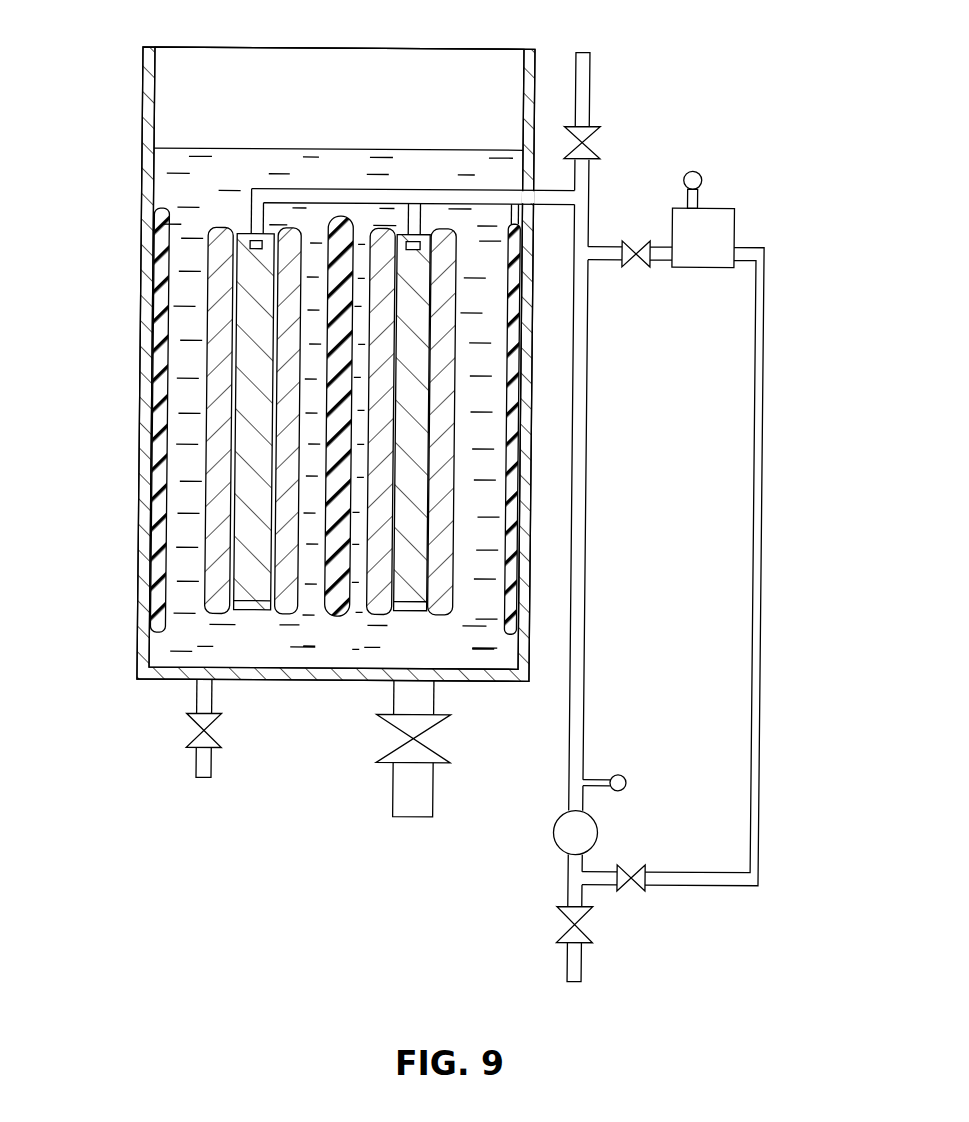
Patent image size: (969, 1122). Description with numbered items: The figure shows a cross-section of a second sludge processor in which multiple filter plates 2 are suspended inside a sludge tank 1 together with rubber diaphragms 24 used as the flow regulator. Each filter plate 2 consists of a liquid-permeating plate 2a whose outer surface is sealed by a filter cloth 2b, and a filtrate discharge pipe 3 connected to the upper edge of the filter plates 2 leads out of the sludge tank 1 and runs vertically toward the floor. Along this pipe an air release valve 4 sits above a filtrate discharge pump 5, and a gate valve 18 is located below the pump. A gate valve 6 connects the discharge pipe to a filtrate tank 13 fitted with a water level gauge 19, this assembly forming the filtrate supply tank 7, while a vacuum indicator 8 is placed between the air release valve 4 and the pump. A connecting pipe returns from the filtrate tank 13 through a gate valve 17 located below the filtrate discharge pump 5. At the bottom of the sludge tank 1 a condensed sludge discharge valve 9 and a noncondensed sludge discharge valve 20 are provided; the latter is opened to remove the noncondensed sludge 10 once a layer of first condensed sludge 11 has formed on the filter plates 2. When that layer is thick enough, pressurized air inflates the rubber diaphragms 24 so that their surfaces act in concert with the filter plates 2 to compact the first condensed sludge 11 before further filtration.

The sludge tank 1 is at (148, 567).
The filter plate 2 is at (165, 420).
The liquid-permeating plate 2a is at (243, 424).
The filter cloth 2b is at (182, 420).
The filtrate discharge pipe 3 is at (594, 540).
The air release valve 4 is at (594, 147).
The filtrate discharge pump 5 is at (561, 828).
The gate valve 6 is at (637, 266).
The filtrate supply tank 7 is at (774, 224).
The vacuum indicator 8 is at (633, 778).
The condensed sludge discharge valve 9 is at (400, 750).
The noncondensed sludge 10 is at (170, 170).
The first condensed sludge 11 is at (221, 478).
The filtrate tank 13 is at (736, 224).
The gate valve 17 is at (767, 298).
The gate valve 18 is at (566, 922).
The water level gauge 19 is at (702, 173).
The noncondensed sludge discharge valve 20 is at (194, 738).
The rubber diaphragm 24 is at (157, 222).